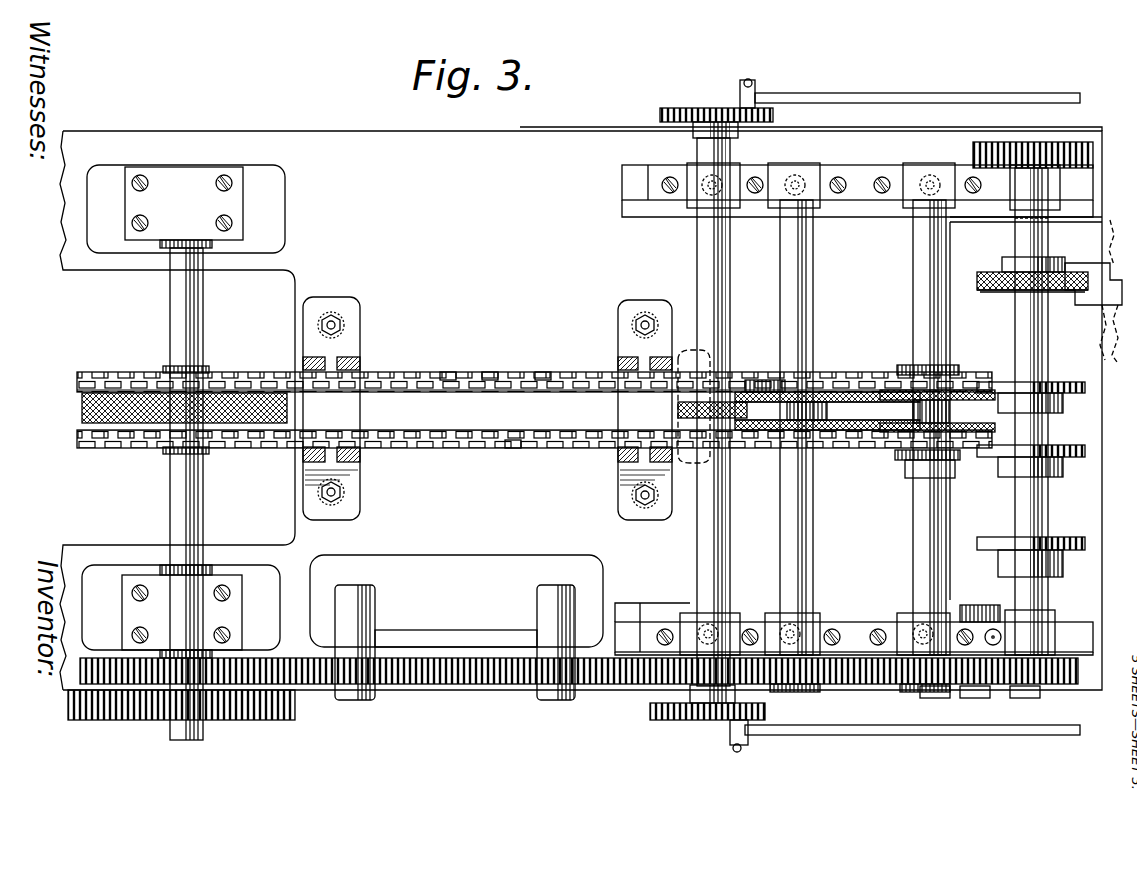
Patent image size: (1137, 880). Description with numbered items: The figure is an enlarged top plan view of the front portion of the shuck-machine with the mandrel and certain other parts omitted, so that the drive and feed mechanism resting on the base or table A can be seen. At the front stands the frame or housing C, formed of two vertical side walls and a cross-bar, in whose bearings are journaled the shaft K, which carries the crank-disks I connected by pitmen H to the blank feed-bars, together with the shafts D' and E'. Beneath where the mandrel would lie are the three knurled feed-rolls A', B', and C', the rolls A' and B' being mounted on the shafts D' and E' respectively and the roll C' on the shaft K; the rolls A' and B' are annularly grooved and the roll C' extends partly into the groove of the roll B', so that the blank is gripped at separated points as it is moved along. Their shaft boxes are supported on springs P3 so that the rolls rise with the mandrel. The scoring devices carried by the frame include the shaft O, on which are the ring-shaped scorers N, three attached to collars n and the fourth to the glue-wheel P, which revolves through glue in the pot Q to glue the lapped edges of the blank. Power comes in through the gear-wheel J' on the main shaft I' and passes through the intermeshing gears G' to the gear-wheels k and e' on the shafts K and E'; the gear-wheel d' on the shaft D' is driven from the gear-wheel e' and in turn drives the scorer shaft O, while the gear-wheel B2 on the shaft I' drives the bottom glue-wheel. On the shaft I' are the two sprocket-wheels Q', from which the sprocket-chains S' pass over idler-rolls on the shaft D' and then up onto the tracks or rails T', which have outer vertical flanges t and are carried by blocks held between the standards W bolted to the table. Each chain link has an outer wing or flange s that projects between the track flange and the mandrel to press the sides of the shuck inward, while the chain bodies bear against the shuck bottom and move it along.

The base or table A is at (581, 408).
The feed-roll A' is at (917, 354).
The feed-roll B' is at (827, 436).
The gear-wheel B2 is at (180, 655).
The frame or housing C is at (854, 410).
The feed-roll C' is at (716, 399).
The shaft D' is at (912, 427).
The shaft E' is at (808, 427).
The intermeshing gears G' is at (579, 641).
The pitman H is at (881, 93).
The crank-disk I is at (711, 422).
The main shaft I' is at (176, 494).
The gear-wheel J' is at (181, 700).
The shaft K is at (697, 252).
The gear-wheel k is at (700, 705).
The scorers N is at (1085, 385).
The collars n is at (1039, 485).
The shaft O is at (1048, 245).
The glue-wheel P is at (985, 272).
The springs P3 is at (722, 180).
The glue-pot Q is at (1026, 408).
The sprocket-wheels Q' is at (200, 412).
The sprocket S is at (765, 430).
The sprocket-chains S' is at (534, 411).
The wing or flange s is at (447, 372).
The vertical flanges t is at (489, 372).
The bracket T is at (1093, 291).
The tracks or rails T' is at (281, 409).
The standards W is at (360, 360).
The gear-wheel e' is at (795, 705).
The gear-wheel d' is at (925, 705).